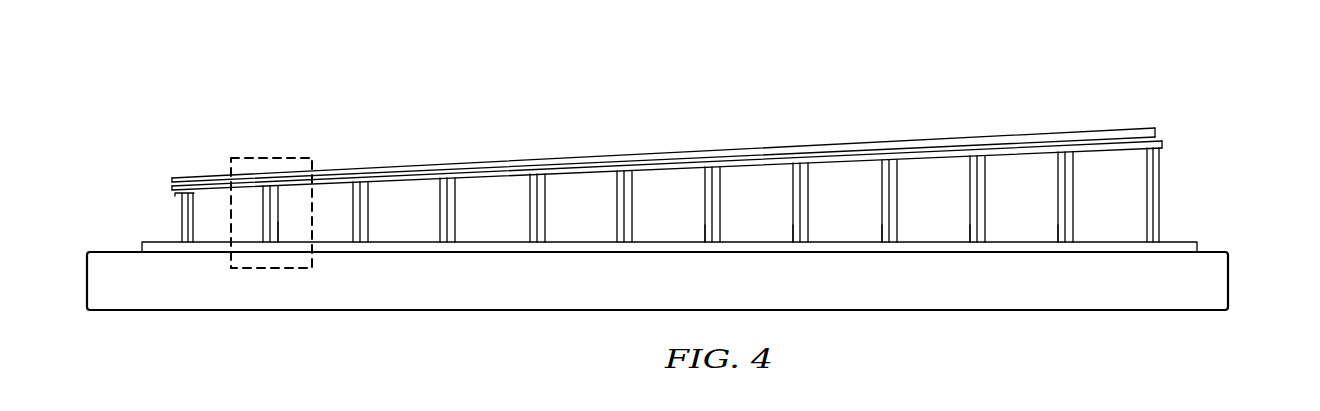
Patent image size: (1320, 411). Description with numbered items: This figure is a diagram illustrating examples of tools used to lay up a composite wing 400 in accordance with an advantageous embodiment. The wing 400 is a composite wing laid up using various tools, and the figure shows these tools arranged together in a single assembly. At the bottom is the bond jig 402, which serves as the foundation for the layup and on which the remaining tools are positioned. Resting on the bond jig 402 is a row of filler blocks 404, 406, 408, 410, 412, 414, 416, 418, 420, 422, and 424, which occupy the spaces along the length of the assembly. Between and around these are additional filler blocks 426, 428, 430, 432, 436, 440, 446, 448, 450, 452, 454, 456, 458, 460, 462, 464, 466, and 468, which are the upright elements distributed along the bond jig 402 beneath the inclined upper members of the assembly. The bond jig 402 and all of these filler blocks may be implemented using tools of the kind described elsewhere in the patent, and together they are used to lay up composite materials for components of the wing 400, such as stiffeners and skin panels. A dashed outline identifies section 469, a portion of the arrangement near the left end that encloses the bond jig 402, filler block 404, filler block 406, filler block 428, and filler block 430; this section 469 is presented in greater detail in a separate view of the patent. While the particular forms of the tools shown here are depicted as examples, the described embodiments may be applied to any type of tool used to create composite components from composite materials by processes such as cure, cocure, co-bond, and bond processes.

The wing 400 is at (690, 75).
The bond jig 402 is at (1196, 247).
The filler block 404 is at (207, 232).
The filler block 406 is at (340, 233).
The filler block 408 is at (423, 226).
The filler block 410 is at (511, 225).
The filler block 412 is at (600, 222).
The filler block 414 is at (688, 219).
The filler block 416 is at (778, 219).
The filler block 418 is at (865, 215).
The filler block 420 is at (953, 212).
The filler block 422 is at (1042, 212).
The filler block 424 is at (1129, 212).
The filler block 426 is at (182, 220).
The filler block 428 is at (263, 208).
The filler block 430 is at (278, 226).
The filler block 432 is at (362, 178).
The filler block 436 is at (446, 172).
The filler block 440 is at (535, 168).
The filler block 446 is at (623, 164).
The filler block 448 is at (705, 226).
The filler block 450 is at (720, 177).
The filler block 452 is at (793, 226).
The filler block 454 is at (807, 171).
The filler block 456 is at (882, 225).
The filler block 458 is at (897, 170).
The filler block 460 is at (970, 224).
The filler block 462 is at (984, 170).
The filler block 464 is at (1059, 224).
The filler block 466 is at (1076, 163).
The filler block 468 is at (1160, 188).
The section 469 is at (296, 148).